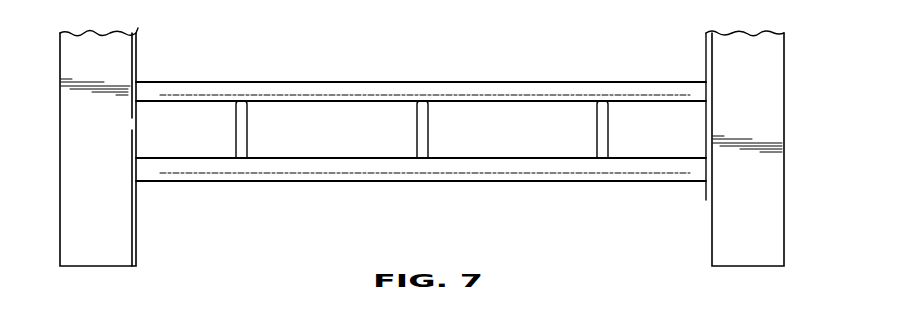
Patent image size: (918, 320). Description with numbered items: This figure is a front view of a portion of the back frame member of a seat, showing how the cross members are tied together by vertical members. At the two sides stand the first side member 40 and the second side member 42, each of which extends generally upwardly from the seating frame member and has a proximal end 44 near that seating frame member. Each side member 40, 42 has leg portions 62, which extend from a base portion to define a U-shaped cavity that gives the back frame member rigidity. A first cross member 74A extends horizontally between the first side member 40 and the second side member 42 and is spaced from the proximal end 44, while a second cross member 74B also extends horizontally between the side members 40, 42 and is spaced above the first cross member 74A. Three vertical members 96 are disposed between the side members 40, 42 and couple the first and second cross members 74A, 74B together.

The first side member 40 is at (788, 52).
The second side member 42 is at (45, 91).
The proximal end 44 is at (114, 270).
The leg portion 62 is at (77, 209).
The first cross member 74A is at (500, 166).
The second cross member 74B is at (472, 82).
The vertical member 96 is at (243, 131).